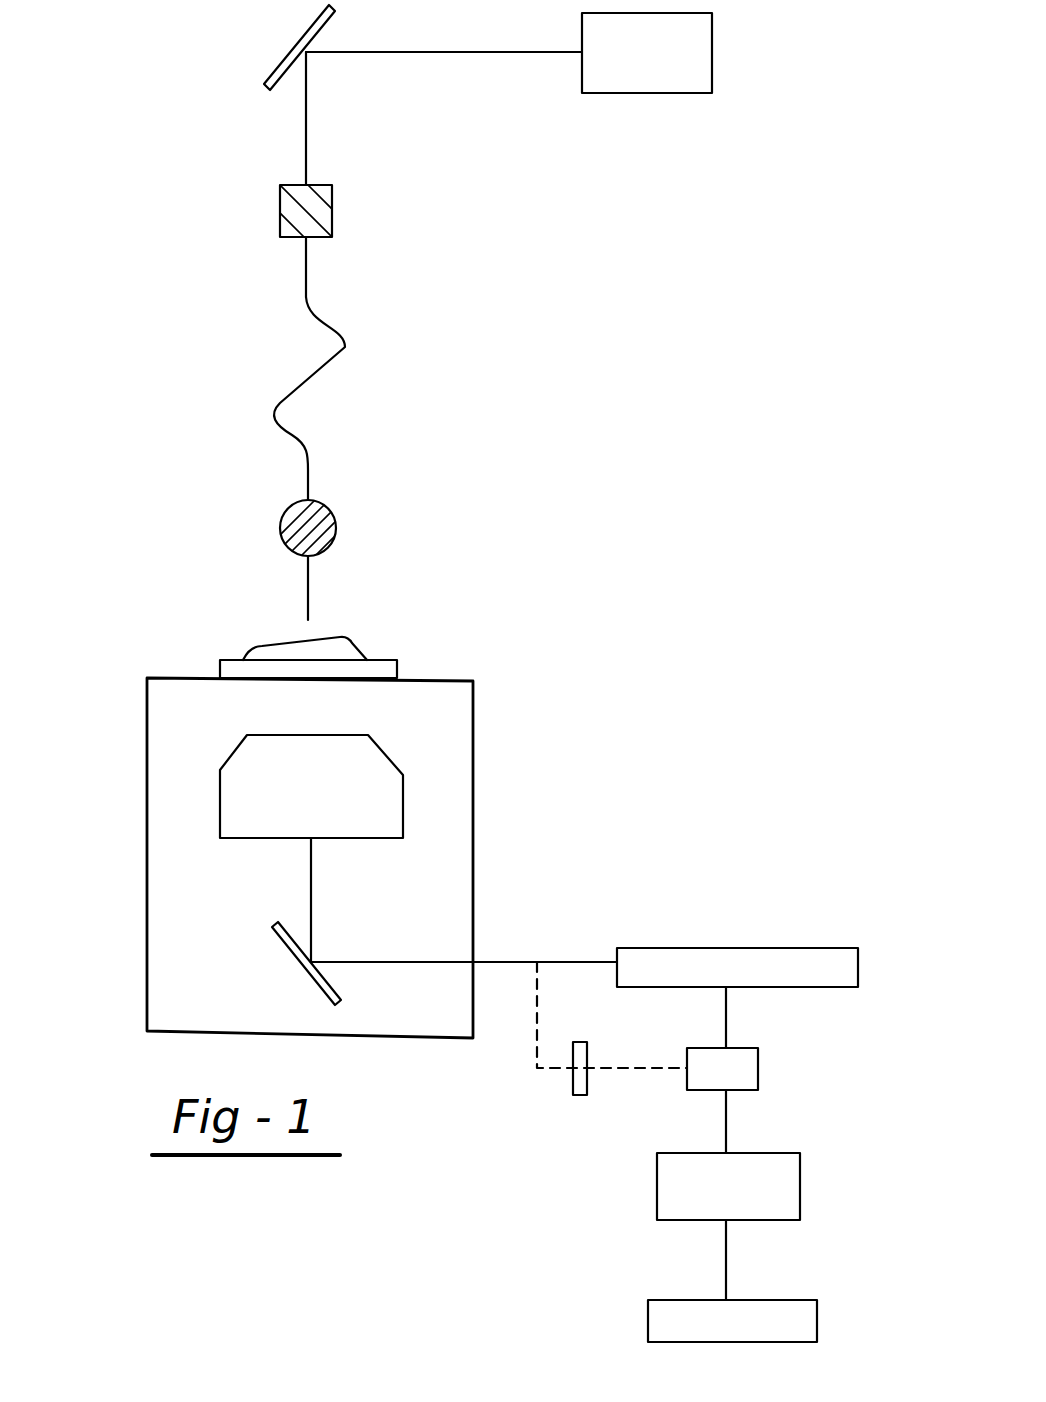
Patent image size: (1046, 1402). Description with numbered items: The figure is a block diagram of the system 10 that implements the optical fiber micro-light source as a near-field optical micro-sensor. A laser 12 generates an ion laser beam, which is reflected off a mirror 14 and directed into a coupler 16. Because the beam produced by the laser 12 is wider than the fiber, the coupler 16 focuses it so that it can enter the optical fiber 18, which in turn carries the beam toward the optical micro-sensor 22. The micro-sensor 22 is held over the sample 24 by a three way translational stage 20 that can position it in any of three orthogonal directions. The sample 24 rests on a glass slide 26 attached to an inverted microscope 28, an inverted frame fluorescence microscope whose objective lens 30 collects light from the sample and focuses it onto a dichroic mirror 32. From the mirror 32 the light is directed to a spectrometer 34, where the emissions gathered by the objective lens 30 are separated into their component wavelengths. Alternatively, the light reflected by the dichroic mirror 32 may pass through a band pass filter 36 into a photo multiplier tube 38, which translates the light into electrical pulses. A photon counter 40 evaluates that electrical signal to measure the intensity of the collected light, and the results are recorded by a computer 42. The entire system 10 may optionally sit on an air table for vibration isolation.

The system 10 is at (554, 408).
The laser 12 is at (623, 94).
The mirror 14 is at (281, 62).
The coupler 16 is at (280, 208).
The optical fiber 18 is at (283, 403).
The three way translational stage 20 is at (280, 527).
The optical micro-sensor 22 is at (308, 619).
The sample 24 is at (258, 647).
The glass slide 26 is at (380, 658).
The inverted microscope 28 is at (147, 775).
The objective lens 30 is at (403, 808).
The mirror 32 is at (290, 950).
The spectrometer 34 is at (757, 948).
The band pass filter 36 is at (573, 1083).
The photo multiplier tube 38 is at (758, 1075).
The photon counter 40 is at (657, 1190).
The computer 42 is at (790, 1300).